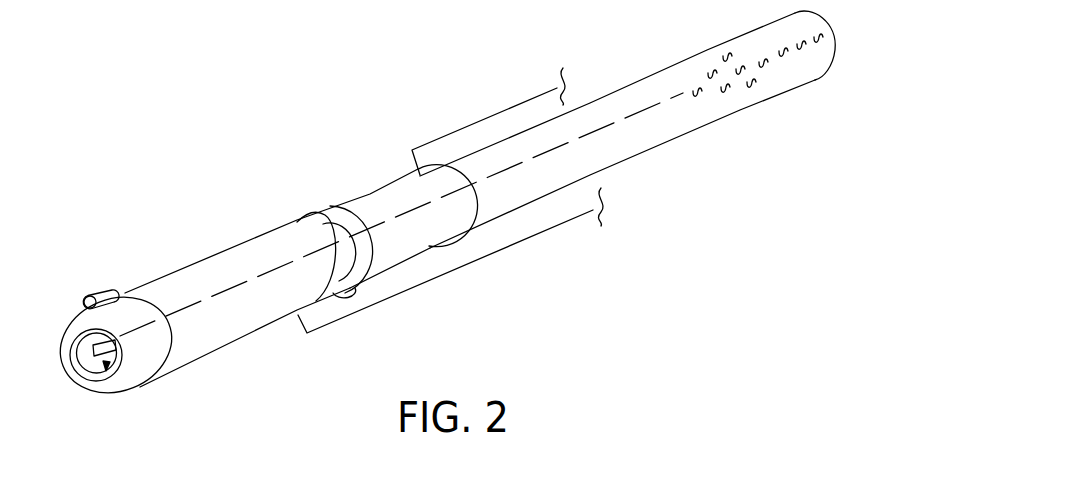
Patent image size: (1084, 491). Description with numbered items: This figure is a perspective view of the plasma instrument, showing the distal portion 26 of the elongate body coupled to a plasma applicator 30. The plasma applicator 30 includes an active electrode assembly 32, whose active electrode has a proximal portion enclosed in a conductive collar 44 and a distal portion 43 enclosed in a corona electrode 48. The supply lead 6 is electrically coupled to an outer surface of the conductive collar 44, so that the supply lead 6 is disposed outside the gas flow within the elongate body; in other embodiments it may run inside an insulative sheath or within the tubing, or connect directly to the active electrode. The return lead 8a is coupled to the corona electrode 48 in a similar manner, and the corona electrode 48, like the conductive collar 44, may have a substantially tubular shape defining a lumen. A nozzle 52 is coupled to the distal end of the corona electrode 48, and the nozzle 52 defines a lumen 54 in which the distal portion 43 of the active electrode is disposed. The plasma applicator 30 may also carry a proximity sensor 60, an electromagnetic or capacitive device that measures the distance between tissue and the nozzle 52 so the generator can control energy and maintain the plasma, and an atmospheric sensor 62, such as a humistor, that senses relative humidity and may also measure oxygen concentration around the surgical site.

The supply lead 6 is at (532, 97).
The return lead 8a is at (548, 228).
The distal portion 26 is at (547, 147).
The plasma applicator 30 is at (218, 211).
The active electrode assembly 32 is at (387, 161).
The distal portion 43 is at (105, 367).
The conductive collar 44 is at (380, 216).
The corona electrode 48 is at (267, 280).
The nozzle 52 is at (153, 324).
The lumen 54 is at (103, 365).
The proximity sensor 60 is at (90, 296).
The atmospheric sensor 62 is at (352, 297).